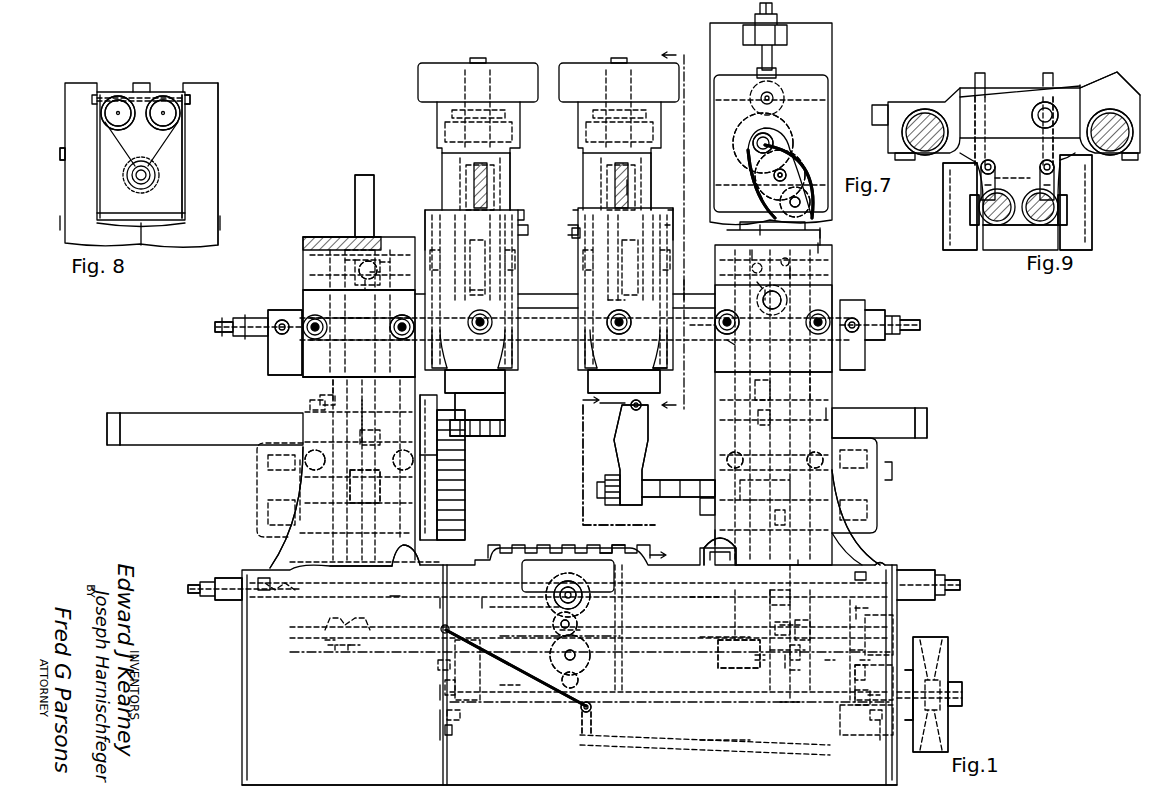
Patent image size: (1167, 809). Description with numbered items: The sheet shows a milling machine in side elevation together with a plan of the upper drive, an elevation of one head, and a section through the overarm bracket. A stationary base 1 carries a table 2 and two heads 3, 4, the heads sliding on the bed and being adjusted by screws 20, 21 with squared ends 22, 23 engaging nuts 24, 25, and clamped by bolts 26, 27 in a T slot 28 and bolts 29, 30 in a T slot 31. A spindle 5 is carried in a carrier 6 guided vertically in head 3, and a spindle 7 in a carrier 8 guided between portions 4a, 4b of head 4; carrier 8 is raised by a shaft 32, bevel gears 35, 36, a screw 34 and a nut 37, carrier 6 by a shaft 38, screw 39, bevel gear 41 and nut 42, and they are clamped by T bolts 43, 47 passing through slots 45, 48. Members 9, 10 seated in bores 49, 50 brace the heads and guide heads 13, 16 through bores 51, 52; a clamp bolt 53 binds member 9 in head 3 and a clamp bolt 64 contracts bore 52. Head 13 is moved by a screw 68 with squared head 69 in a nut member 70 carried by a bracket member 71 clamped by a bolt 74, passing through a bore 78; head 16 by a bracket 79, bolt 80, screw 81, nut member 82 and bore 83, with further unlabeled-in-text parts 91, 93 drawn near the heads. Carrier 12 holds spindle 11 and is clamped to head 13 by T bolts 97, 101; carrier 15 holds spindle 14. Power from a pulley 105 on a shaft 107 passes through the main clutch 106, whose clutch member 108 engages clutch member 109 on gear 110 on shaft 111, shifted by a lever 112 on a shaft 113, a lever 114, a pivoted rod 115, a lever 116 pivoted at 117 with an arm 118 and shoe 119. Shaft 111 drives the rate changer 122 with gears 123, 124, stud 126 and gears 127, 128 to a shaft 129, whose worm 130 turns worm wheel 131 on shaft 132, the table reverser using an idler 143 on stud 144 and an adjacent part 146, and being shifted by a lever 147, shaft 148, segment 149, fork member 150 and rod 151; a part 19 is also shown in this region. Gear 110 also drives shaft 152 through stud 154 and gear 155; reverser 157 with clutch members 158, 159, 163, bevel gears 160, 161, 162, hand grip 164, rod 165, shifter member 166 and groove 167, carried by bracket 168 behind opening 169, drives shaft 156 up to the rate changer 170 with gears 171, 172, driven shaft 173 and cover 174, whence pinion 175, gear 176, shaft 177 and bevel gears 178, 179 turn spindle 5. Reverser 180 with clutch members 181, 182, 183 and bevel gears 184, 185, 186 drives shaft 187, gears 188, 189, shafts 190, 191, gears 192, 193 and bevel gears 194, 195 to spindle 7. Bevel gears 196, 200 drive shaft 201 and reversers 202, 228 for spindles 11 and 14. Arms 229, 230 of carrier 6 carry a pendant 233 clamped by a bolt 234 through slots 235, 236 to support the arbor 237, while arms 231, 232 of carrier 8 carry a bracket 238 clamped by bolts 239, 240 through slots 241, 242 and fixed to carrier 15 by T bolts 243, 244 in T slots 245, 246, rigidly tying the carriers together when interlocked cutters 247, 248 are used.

In FIG. 1, the base 1 is at (245, 738).
In FIG. 1, the table 2 is at (628, 545).
In FIG. 1, the head 3 is at (870, 550).
In FIG. 1, the head 4 is at (288, 545).
In FIG. 8, the head portion 4a is at (60, 154).
In FIG. 8, the head portion 4b is at (218, 152).
In FIG. 1, the spindle 5 is at (705, 507).
In FIG. 1, the spindle carrier 6 is at (725, 532).
In FIG. 8, the spindle carrier 6 is at (177, 192).
In FIG. 1, the spindle 7 is at (427, 465).
In FIG. 1, the carrier 8 is at (615, 478).
In FIG. 1, the member 9 is at (432, 288).
In FIG. 9, the member 9 is at (923, 145).
In FIG. 9, the member 10 is at (1115, 152).
In FIG. 1, the spindle 11 is at (612, 405).
In FIG. 1, the carrier 12 is at (652, 162).
In FIG. 1, the head 13 is at (673, 214).
In FIG. 1, the spindle 14 is at (482, 400).
In FIG. 1, the carrier 15 is at (500, 160).
In FIG. 9, the carrier 15 is at (1062, 158).
In FIG. 1, the head 16 is at (430, 214).
In FIG. 9, the head 16 is at (1120, 96).
In FIG. 1, the sprocket 19 is at (572, 588).
In FIG. 1, the screw 20 is at (920, 590).
In FIG. 1, the screw 21 is at (230, 596).
In FIG. 1, the squared end 22 is at (947, 586).
In FIG. 1, the squared end 23 is at (188, 582).
In FIG. 1, the nut 24 is at (855, 575).
In FIG. 1, the nut 25 is at (280, 585).
In FIG. 1, the bolt 26 is at (878, 568).
In FIG. 1, the bolt 27 is at (738, 568).
In FIG. 1, the T slot 28 is at (705, 597).
In FIG. 1, the bolt 29 is at (262, 578).
In FIG. 1, the bolt 30 is at (398, 574).
In FIG. 1, the T slot 31 is at (395, 596).
In FIG. 1, the shaft 32 is at (378, 274).
In FIG. 1, the screw 34 is at (367, 355).
In FIG. 1, the bevel gear 35 is at (372, 258).
In FIG. 1, the bevel gear 36 is at (372, 285).
In FIG. 1, the nut 37 is at (372, 418).
In FIG. 1, the shaft 38 is at (752, 255).
In FIG. 1, the screw 39 is at (765, 356).
In FIG. 1, the bevel gear 41 is at (751, 280).
In FIG. 1, the nut 42 is at (762, 415).
In FIG. 1, the T bolt 43 is at (318, 470).
In FIG. 1, the slot 45 is at (310, 404).
In FIG. 1, the T bolt 47 is at (727, 458).
In FIG. 1, the slot 48 is at (826, 414).
In FIG. 1, the bore 49 is at (815, 375).
In FIG. 1, the bore 50 is at (390, 368).
In FIG. 1, the bore 51 is at (510, 378).
In FIG. 1, the bore 52 is at (585, 368).
In FIG. 1, the clamp bolt 53 is at (725, 343).
In FIG. 1, the clamp bolt 64 is at (662, 372).
In FIG. 1, the screw 68 is at (880, 316).
In FIG. 1, the squared head 69 is at (918, 325).
In FIG. 1, the nut member 70 is at (712, 322).
In FIG. 1, the bracket member 71 is at (855, 370).
In FIG. 1, the bolt 74 is at (852, 312).
In FIG. 1, the bore 78 is at (735, 335).
In FIG. 1, the bracket 79 is at (278, 375).
In FIG. 1, the bolt 80 is at (278, 320).
In FIG. 1, the screw 81 is at (218, 332).
In FIG. 1, the nut member 82 is at (404, 319).
In FIG. 1, the bore 83 is at (352, 326).
In FIG. 1, the bolt 91 is at (631, 322).
In FIG. 1, the piston 93 is at (627, 186).
In FIG. 1, the T bolt 97 is at (668, 230).
In FIG. 1, the T bolt 101 is at (572, 233).
In FIG. 1, the pulley 105 is at (940, 640).
In FIG. 1, the main clutch 106 is at (870, 700).
In FIG. 1, the shaft 107 is at (916, 703).
In FIG. 1, the clutch member 108 is at (866, 664).
In FIG. 1, the clutch member 109 is at (858, 656).
In FIG. 1, the gear 110 is at (860, 700).
In FIG. 1, the shaft 111 is at (790, 700).
In FIG. 1, the lever 112 is at (495, 656).
In FIG. 1, the shaft 113 is at (592, 707).
In FIG. 1, the lever 114 is at (582, 730).
In FIG. 1, the pivoted rod 115 is at (722, 742).
In FIG. 1, the lever 116 is at (885, 735).
In FIG. 1, the pivot 117 is at (906, 685).
In FIG. 1, the arm 118 is at (875, 715).
In FIG. 1, the pivoted shoe 119 is at (862, 673).
In FIG. 1, the rate changer 122 is at (438, 692).
In FIG. 1, the gear 123 is at (450, 680).
In FIG. 1, the gear 124 is at (448, 730).
In FIG. 1, the stud 126 is at (455, 715).
In FIG. 1, the gear 127 is at (440, 722).
In FIG. 1, the gear 128 is at (440, 667).
In FIG. 1, the shaft 129 is at (508, 683).
In FIG. 1, the worm 130 is at (580, 680).
In FIG. 1, the worm wheel 131 is at (590, 653).
In FIG. 1, the shaft 132 is at (565, 656).
In FIG. 1, the idler 143 is at (590, 605).
In FIG. 1, the stud 144 is at (580, 620).
In FIG. 1, the shaft 146 is at (578, 631).
In FIG. 1, the lever 147 is at (420, 555).
In FIG. 1, the shaft 148 is at (525, 607).
In FIG. 1, the segment 149 is at (553, 603).
In FIG. 1, the fork member 150 is at (553, 624).
In FIG. 1, the rod 151 is at (558, 635).
In FIG. 1, the shaft 152 is at (725, 630).
In FIG. 1, the stud 154 is at (830, 668).
In FIG. 1, the gear 155 is at (862, 601).
In FIG. 1, the shaft 156 is at (800, 560).
In FIG. 7, the shaft 156 is at (802, 208).
In FIG. 1, the reverser 157 is at (785, 665).
In FIG. 1, the clutch member 158 is at (856, 612).
In FIG. 1, the clutch member 159 is at (780, 622).
In FIG. 1, the bevel gear 160 is at (798, 652).
In FIG. 1, the bevel gear 161 is at (780, 655).
In FIG. 1, the bevel gear 162 is at (800, 628).
In FIG. 1, the clutch member 163 is at (800, 655).
In FIG. 1, the hand grip 164 is at (750, 654).
In FIG. 1, the rod 165 is at (758, 660).
In FIG. 1, the shifter member 166 is at (795, 674).
In FIG. 1, the annular groove 167 is at (785, 630).
In FIG. 1, the bracket 168 is at (778, 594).
In FIG. 1, the opening 169 is at (760, 668).
In FIG. 7, the rate changer 170 is at (795, 172).
In FIG. 1, the gear 171 is at (818, 248).
In FIG. 7, the gear 171 is at (805, 199).
In FIG. 1, the gear 172 is at (760, 230).
In FIG. 7, the gear 172 is at (760, 185).
In FIG. 1, the driven shaft 173 is at (795, 272).
In FIG. 7, the driven shaft 173 is at (800, 170).
In FIG. 1, the cover 174 is at (820, 232).
In FIG. 7, the cover 174 is at (812, 185).
In FIG. 1, the pinion 175 is at (790, 262).
In FIG. 7, the pinion 175 is at (790, 160).
In FIG. 1, the gear 176 is at (752, 270).
In FIG. 7, the gear 176 is at (782, 125).
In FIG. 1, the shaft 177 is at (762, 388).
In FIG. 7, the shaft 177 is at (758, 135).
In FIG. 1, the bevel gear 178 is at (733, 458).
In FIG. 1, the bevel gear 179 is at (780, 520).
In FIG. 1, the reverser 180 is at (337, 650).
In FIG. 1, the clutch member 181 is at (342, 653).
In FIG. 1, the clutch member 182 is at (352, 650).
In FIG. 1, the clutch member 183 is at (330, 642).
In FIG. 1, the bevel gear 184 is at (355, 648).
In FIG. 1, the bevel gear 185 is at (347, 620).
In FIG. 1, the bevel gear 186 is at (330, 650).
In FIG. 1, the shaft 187 is at (342, 392).
In FIG. 1, the gear 188 is at (320, 237).
In FIG. 1, the gear 189 is at (362, 237).
In FIG. 1, the shaft 190 is at (355, 248).
In FIG. 1, the shaft 191 is at (370, 436).
In FIG. 1, the gear 192 is at (350, 266).
In FIG. 1, the gear 193 is at (385, 268).
In FIG. 1, the bevel gear 194 is at (399, 459).
In FIG. 1, the gear 195 is at (355, 515).
In FIG. 1, the bevel gear 196 is at (795, 300).
In FIG. 1, the bevel gear 200 is at (765, 296).
In FIG. 1, the shaft 201 is at (696, 290).
In FIG. 1, the reverser 202 is at (615, 300).
In FIG. 1, the reverser 228 is at (475, 292).
In FIG. 1, the arm 229 is at (915, 408).
In FIG. 8, the arm 229 is at (170, 115).
In FIG. 1, the arm 230 is at (925, 438).
In FIG. 8, the arm 230 is at (108, 118).
In FIG. 1, the arm 231 is at (140, 445).
In FIG. 1, the arm 232 is at (115, 445).
In FIG. 1, the pendant 233 is at (628, 455).
In FIG. 1, the bolt 234 is at (633, 412).
In FIG. 8, the bolt 234 is at (187, 97).
In FIG. 8, the slot 235 is at (160, 96).
In FIG. 8, the slot 236 is at (118, 95).
In FIG. 1, the arbor 237 is at (665, 497).
In FIG. 1, the bracket 238 is at (465, 436).
In FIG. 9, the bracket 238 is at (1016, 225).
In FIG. 9, the bolt 239 is at (975, 230).
In FIG. 9, the bolt 240 is at (1092, 226).
In FIG. 9, the slot 241 is at (970, 210).
In FIG. 9, the slot 242 is at (1068, 205).
In FIG. 9, the T bolt 243 is at (980, 172).
In FIG. 9, the T bolt 244 is at (1040, 160).
In FIG. 9, the T slot 245 is at (978, 158).
In FIG. 9, the T slot 246 is at (1033, 118).
In FIG. 1, the cutter 247 is at (466, 512).
In FIG. 1, the cutter 248 is at (507, 428).